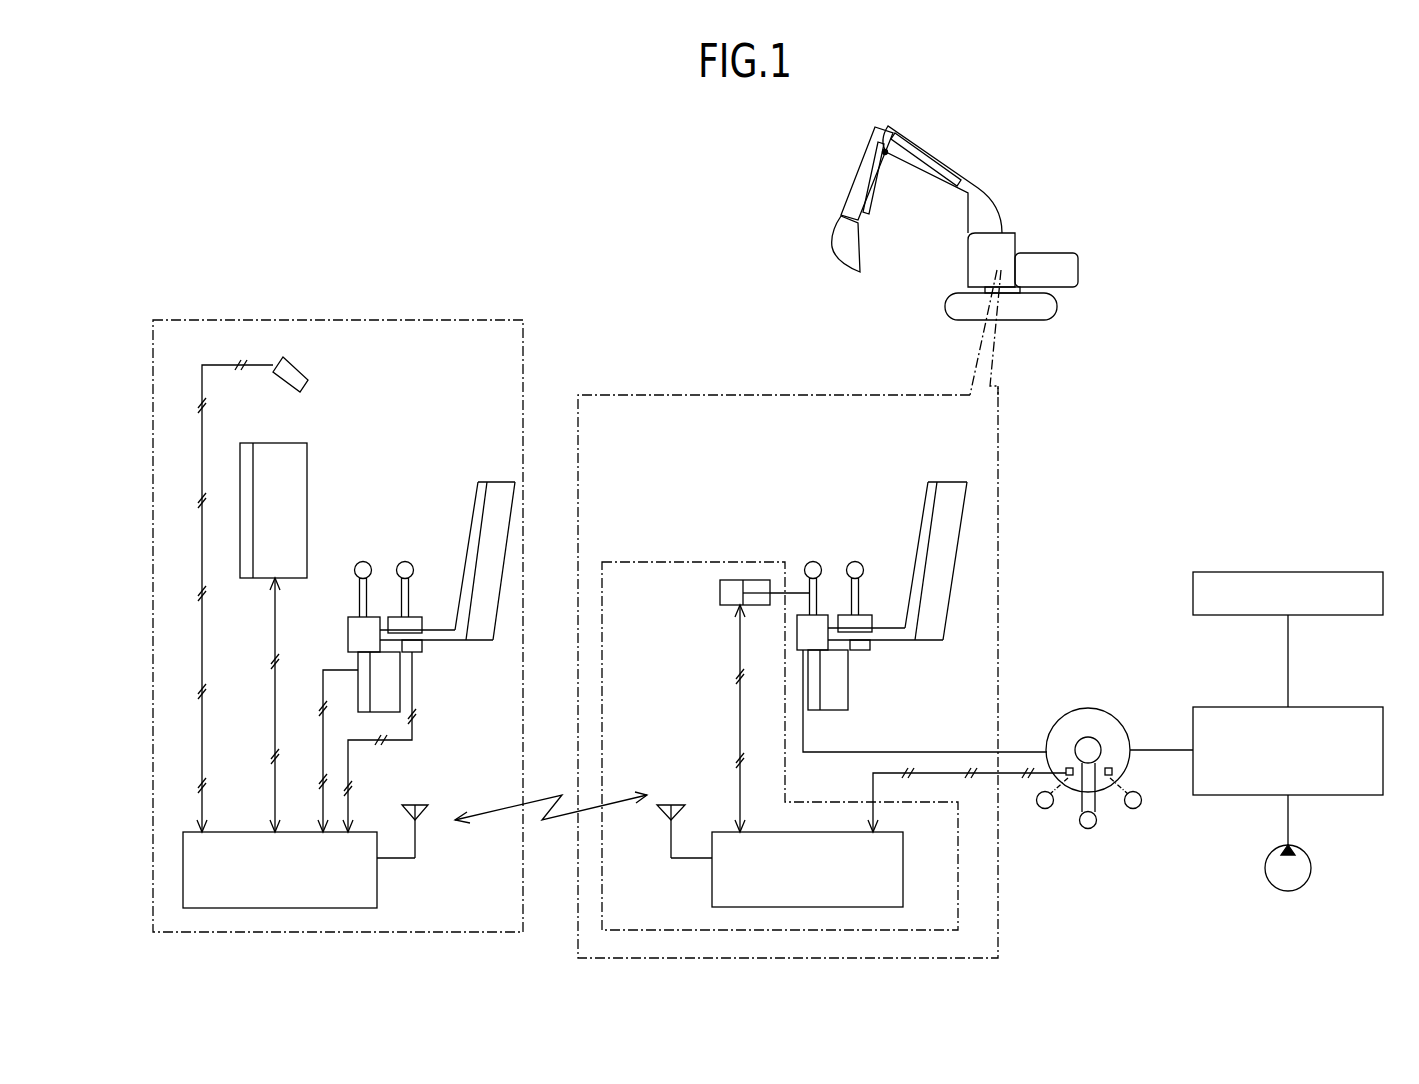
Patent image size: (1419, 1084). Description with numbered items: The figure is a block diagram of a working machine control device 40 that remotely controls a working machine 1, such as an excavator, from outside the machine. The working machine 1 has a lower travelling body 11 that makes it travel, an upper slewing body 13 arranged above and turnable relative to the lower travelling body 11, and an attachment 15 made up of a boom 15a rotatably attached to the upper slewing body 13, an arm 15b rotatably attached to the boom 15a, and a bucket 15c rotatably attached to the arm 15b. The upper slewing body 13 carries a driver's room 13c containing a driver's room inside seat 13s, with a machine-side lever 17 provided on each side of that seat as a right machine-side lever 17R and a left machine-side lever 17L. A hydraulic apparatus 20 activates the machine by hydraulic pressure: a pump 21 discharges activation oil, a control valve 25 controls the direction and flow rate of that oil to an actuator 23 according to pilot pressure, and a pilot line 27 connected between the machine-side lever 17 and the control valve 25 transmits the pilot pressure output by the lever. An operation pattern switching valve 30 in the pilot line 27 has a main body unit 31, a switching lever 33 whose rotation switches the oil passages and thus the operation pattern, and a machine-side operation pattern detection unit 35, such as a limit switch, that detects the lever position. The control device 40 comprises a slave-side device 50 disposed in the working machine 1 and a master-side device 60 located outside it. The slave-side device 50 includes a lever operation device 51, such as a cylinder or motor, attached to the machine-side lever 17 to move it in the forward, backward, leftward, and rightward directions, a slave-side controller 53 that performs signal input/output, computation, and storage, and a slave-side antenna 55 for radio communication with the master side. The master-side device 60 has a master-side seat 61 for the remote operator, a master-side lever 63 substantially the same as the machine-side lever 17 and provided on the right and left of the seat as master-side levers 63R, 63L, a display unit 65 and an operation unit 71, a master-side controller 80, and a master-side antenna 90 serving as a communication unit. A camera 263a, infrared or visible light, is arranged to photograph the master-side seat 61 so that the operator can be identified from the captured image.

The working machine 1 is at (795, 150).
The working machine control device 40 is at (667, 160).
The attachment 15 is at (967, 150).
The boom 15a is at (975, 195).
The arm 15b is at (866, 205).
The bucket 15c is at (852, 262).
The driver's room 13c is at (1010, 233).
The upper slewing body 13 is at (1078, 270).
The lower travelling body 11 is at (1057, 307).
The master-side device 60 is at (497, 320).
The camera 263a is at (290, 360).
The display unit 65 is at (288, 618).
The operation unit 71 is at (272, 443).
The master-side seat 61 is at (480, 482).
The master-side lever 63 is at (426, 516).
The master-side lever on the left side 63L is at (364, 561).
The master-side lever on the right side 63R is at (406, 561).
The master-side controller 80 is at (355, 832).
The master-side antenna 90 is at (418, 805).
The hydraulic apparatus 20 is at (1073, 545).
The slave-side device 50 is at (641, 562).
The lever operation device 51 is at (720, 593).
The driver's room inside seat 13s is at (933, 482).
The machine-side lever 17 is at (884, 516).
The machine-side lever on the left side 17L is at (814, 561).
The machine-side lever on the right side 17R is at (856, 561).
The pilot line 27 is at (932, 752).
The slave-side antenna 55 is at (678, 805).
The slave-side controller 53 is at (905, 870).
The operation pattern switching valve 30 is at (1100, 708).
The main body unit 31 is at (1063, 714).
The switching lever 33 is at (1088, 830).
The machine-side operation pattern detection unit 35 is at (1071, 778).
The actuator 23 is at (1355, 572).
The control valve 25 is at (1355, 707).
The pump 21 is at (1302, 850).